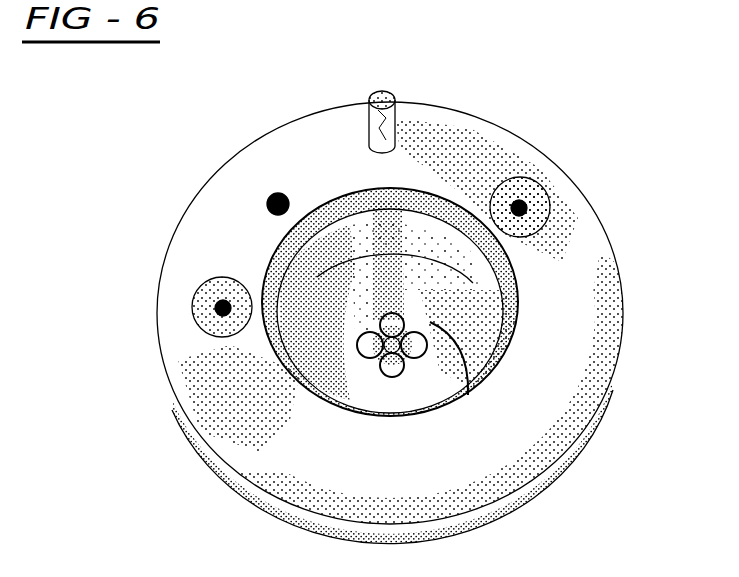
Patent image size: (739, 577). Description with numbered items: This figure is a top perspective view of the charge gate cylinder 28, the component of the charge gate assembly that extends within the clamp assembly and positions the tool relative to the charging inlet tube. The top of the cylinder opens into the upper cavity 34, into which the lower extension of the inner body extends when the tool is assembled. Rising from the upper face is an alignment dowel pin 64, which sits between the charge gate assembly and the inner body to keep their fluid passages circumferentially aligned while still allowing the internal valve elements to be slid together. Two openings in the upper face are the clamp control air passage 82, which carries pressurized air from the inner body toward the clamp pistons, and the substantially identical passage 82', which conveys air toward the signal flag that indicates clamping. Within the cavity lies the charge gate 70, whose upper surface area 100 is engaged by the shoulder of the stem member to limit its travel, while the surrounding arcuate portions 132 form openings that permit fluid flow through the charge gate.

The charge gate cylinder 28 is at (158, 262).
The alignment dowel pin 64 is at (384, 92).
The clamp control air passage 82 is at (550, 158).
The clamp control air passage 82' is at (172, 368).
The upper surface area 100 is at (370, 330).
The upper cavity 34 is at (450, 310).
The charge gate 70 is at (337, 372).
The arcuate portions 132 is at (463, 357).